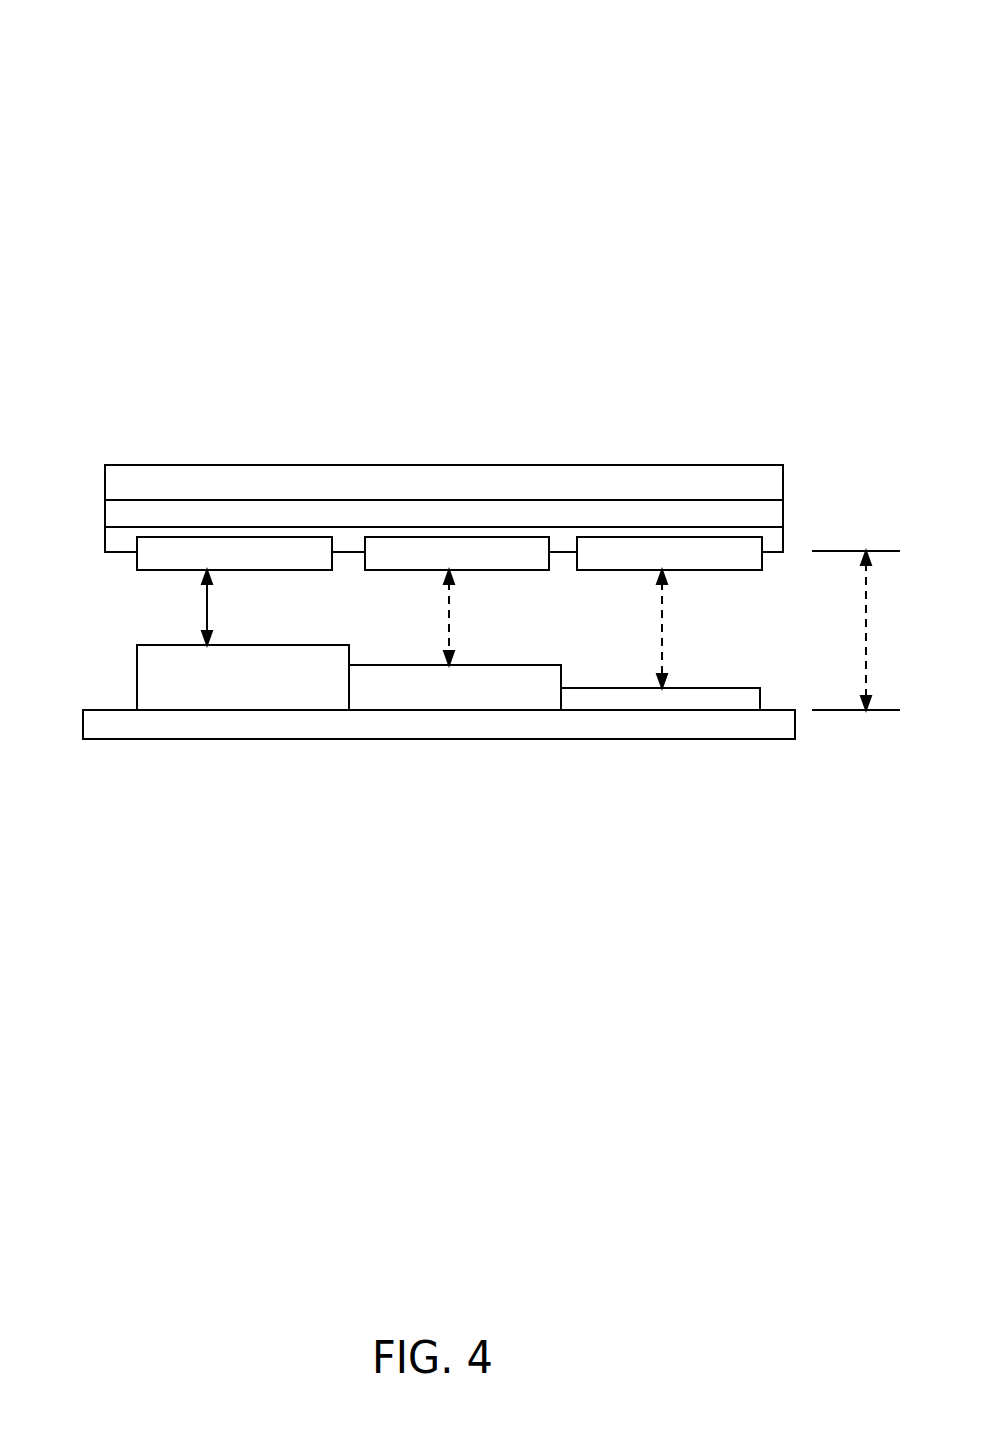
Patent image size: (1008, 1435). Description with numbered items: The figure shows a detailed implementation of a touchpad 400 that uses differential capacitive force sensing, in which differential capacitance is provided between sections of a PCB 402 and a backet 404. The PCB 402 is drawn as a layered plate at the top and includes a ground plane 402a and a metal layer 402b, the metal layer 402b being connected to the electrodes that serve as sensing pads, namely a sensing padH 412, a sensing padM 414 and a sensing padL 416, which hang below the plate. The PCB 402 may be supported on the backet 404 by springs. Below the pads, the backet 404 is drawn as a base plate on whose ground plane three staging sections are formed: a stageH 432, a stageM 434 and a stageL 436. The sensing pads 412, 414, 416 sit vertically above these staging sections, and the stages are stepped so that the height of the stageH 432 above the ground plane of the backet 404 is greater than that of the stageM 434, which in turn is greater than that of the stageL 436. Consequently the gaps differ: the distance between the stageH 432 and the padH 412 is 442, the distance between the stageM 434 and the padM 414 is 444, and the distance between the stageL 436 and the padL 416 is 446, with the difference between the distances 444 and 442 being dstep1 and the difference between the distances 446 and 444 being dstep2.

The touchpad 400 is at (190, 90).
The PCB 402 is at (165, 465).
The ground plane 402a is at (788, 503).
The metal layer 402b is at (785, 533).
The backet 404 is at (253, 740).
The sensing padH 412 is at (273, 570).
The sensing padM 414 is at (410, 552).
The sensing padL 416 is at (625, 552).
The stageH 432 is at (137, 672).
The stageM 434 is at (448, 707).
The stageL 436 is at (678, 710).
The distance between stageH and padH 442 is at (207, 612).
The distance between stageM and padM 444 is at (449, 606).
The distance between stageL and padL 446 is at (662, 622).